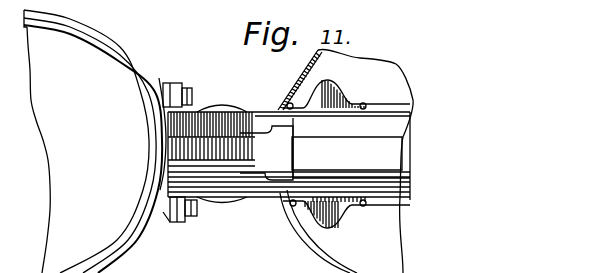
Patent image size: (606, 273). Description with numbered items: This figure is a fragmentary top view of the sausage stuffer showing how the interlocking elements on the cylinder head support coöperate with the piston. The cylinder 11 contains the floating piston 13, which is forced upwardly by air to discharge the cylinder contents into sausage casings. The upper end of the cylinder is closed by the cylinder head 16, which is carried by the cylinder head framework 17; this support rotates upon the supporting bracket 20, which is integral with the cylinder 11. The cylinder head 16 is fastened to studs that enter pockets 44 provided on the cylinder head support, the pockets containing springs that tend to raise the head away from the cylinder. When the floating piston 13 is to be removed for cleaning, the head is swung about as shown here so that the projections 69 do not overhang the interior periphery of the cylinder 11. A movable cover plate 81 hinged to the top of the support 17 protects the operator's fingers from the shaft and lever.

The cylinder 11 is at (110, 251).
The floating piston 13 is at (95, 165).
The cylinder head 16 is at (372, 256).
The cylinder head framework 17 is at (350, 134).
The supporting bracket 20 is at (184, 217).
The pockets 44 is at (376, 84).
The projections 69 is at (166, 100).
The movable cover plate 81 is at (255, 139).